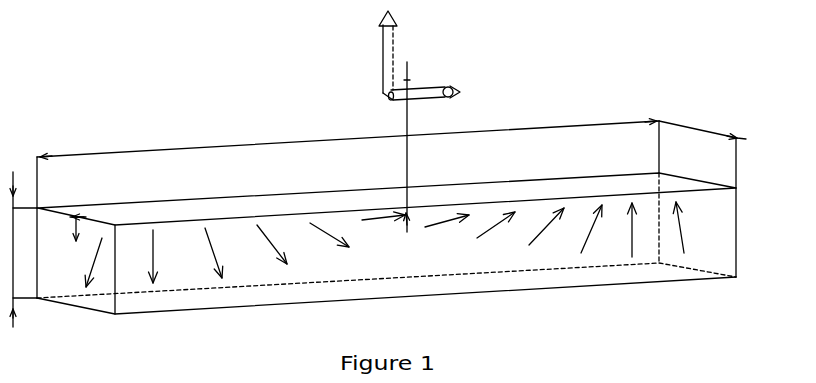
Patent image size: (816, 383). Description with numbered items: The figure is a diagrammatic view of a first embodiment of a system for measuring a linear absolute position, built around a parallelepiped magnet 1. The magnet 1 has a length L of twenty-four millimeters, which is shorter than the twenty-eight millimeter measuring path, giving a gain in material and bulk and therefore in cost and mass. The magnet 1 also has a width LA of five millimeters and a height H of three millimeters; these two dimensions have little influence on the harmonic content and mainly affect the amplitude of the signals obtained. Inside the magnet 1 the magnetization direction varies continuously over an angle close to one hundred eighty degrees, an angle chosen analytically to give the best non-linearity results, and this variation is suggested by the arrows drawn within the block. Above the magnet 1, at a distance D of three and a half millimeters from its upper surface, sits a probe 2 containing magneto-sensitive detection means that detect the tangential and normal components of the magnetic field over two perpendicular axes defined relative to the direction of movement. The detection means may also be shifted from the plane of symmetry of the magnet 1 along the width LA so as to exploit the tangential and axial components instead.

The parallelepiped magnet 1 is at (187, 213).
The probe 2 is at (382, 97).
The height H is at (21, 249).
The length L is at (348, 164).
The width LA is at (702, 152).
The distance D is at (400, 147).